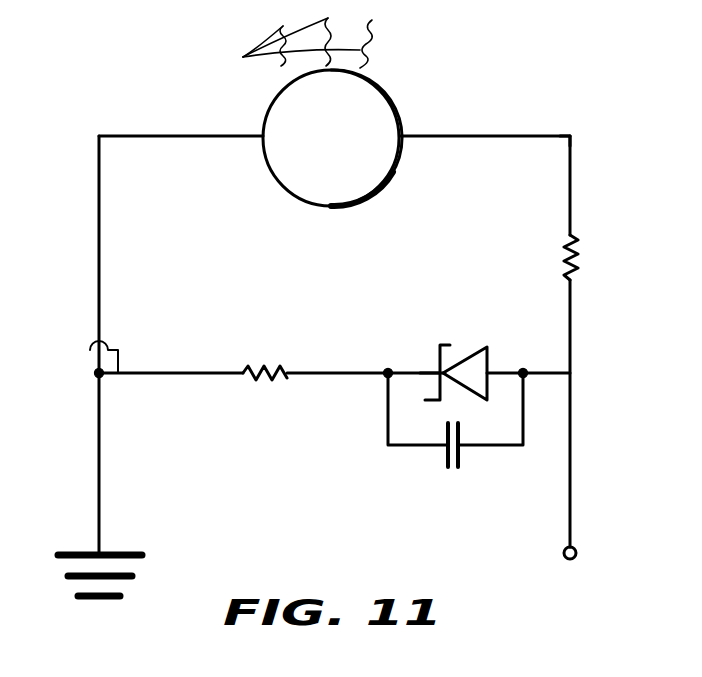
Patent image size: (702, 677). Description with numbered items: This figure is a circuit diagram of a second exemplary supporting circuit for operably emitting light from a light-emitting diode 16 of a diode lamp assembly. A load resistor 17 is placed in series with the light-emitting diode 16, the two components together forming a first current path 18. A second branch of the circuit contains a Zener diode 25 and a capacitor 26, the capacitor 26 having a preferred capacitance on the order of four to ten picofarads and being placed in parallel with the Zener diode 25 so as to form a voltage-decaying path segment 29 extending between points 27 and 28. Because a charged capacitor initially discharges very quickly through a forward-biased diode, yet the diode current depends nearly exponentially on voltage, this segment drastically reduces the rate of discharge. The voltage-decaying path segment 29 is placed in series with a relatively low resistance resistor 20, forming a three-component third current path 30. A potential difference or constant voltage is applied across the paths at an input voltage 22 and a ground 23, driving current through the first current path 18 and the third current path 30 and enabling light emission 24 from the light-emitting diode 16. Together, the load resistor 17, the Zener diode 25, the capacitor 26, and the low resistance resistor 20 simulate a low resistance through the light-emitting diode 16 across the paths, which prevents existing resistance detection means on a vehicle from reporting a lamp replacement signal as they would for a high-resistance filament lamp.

The light-emitting diode 16 is at (382, 97).
The load resistor 17 is at (563, 250).
The first current path 18 is at (570, 135).
The low resistance resistor 20 is at (268, 366).
The input voltage 22 is at (578, 551).
The ground 23 is at (80, 547).
The light emission 24 is at (247, 57).
The Zener diode 25 is at (490, 362).
The capacitor 26 is at (445, 455).
The point 27 is at (523, 370).
The point 28 is at (388, 370).
The voltage-decaying path segment 29 is at (410, 362).
The third current path 30 is at (90, 350).